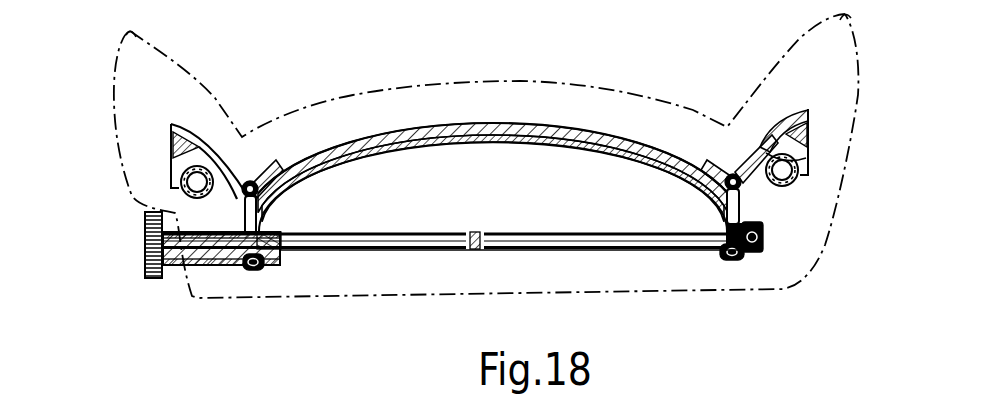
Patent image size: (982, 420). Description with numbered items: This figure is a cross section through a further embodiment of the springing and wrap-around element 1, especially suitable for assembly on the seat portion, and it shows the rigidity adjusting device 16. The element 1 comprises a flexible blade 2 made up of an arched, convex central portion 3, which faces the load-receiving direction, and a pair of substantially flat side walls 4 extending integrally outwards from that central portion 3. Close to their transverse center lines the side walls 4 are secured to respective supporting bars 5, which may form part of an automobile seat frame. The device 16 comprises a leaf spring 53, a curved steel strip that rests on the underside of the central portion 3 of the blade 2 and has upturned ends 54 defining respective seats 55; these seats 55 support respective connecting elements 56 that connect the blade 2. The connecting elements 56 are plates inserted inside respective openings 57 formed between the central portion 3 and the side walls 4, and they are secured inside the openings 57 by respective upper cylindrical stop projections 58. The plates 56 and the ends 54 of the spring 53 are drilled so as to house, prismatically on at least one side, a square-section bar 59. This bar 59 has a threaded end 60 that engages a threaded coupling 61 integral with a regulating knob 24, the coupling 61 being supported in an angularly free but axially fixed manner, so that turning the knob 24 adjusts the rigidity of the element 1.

The springing and wrap-around element 1 is at (336, 86).
The flexible blade 2 is at (601, 116).
The central portion 3 is at (487, 130).
The side walls 4 is at (170, 140).
The supporting bars 5 is at (808, 158).
The rigidity adjusting device 16 is at (283, 270).
The regulating knob 24 is at (145, 262).
The leaf spring 53 is at (353, 161).
The upturned ends 54 is at (249, 271).
The seats 55 is at (240, 234).
The connecting elements 56 is at (279, 180).
The openings 57 is at (215, 150).
The upper cylindrical stop projections 58 is at (251, 180).
The square-section bar 59 is at (551, 232).
The threaded end 60 is at (217, 266).
The threaded coupling 61 is at (186, 265).